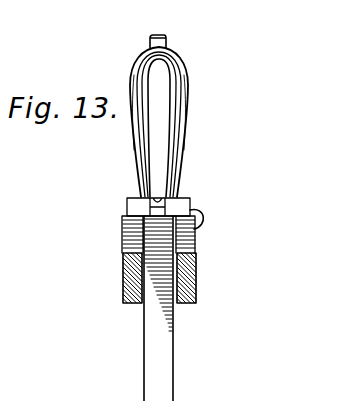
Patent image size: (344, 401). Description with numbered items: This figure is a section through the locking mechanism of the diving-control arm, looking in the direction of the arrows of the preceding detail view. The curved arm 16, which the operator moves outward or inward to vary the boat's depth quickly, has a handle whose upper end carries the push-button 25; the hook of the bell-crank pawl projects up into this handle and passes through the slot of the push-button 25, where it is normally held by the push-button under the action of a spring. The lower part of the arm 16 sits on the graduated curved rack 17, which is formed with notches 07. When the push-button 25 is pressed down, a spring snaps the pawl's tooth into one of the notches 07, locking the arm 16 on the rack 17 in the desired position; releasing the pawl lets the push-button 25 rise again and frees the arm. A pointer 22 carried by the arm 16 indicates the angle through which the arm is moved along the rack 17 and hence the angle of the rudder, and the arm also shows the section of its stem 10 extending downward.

The push-button 25 is at (167, 38).
The curved arm 16 is at (166, 152).
The notches 07 is at (127, 232).
The pointer 22 is at (200, 218).
The curved rack 17 is at (197, 278).
The rod 10 is at (176, 372).